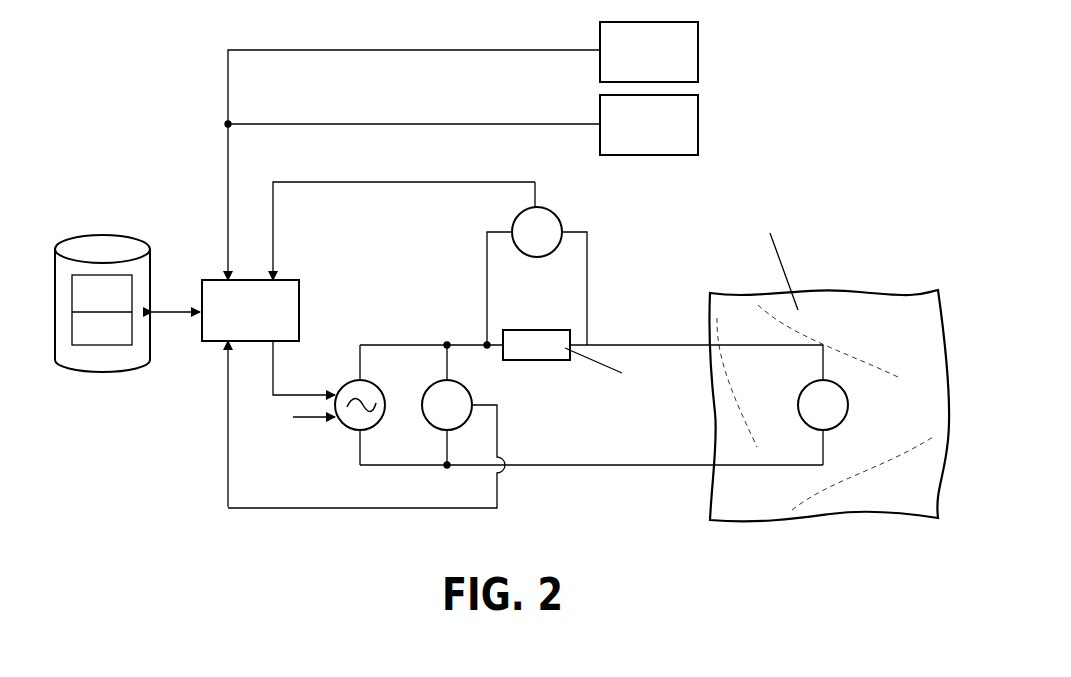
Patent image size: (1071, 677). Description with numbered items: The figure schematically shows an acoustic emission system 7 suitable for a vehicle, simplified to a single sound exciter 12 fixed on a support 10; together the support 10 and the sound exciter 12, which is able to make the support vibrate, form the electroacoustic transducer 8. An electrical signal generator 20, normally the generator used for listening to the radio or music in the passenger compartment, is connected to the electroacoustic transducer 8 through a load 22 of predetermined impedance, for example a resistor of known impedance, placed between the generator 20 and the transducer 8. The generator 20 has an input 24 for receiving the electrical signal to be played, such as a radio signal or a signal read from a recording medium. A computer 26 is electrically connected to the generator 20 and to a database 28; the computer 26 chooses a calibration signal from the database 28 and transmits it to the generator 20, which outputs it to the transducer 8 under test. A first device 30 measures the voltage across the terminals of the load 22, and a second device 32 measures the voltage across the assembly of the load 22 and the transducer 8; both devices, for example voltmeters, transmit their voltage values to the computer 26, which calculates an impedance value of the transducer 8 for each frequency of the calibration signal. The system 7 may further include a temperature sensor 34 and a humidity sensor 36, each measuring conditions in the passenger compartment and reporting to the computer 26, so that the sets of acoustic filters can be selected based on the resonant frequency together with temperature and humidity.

The acoustic emission system 7 is at (252, 528).
The electroacoustic transducer 8 is at (829, 422).
The support 10 is at (868, 498).
The sound exciter 12 is at (828, 400).
The electrical signal generator 20 is at (352, 380).
The load 22 is at (553, 350).
The input 24 is at (314, 435).
The computer 26 is at (343, 344).
The database 28 is at (84, 373).
The first device 30 is at (557, 213).
The second device 32 is at (440, 381).
The temperature sensor 34 is at (463, 151).
The humidity sensor 36 is at (461, 125).